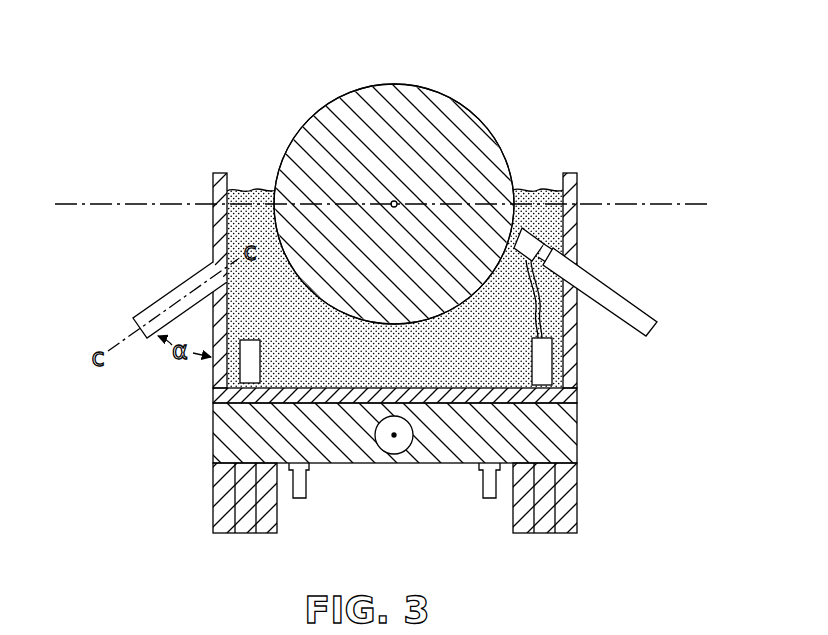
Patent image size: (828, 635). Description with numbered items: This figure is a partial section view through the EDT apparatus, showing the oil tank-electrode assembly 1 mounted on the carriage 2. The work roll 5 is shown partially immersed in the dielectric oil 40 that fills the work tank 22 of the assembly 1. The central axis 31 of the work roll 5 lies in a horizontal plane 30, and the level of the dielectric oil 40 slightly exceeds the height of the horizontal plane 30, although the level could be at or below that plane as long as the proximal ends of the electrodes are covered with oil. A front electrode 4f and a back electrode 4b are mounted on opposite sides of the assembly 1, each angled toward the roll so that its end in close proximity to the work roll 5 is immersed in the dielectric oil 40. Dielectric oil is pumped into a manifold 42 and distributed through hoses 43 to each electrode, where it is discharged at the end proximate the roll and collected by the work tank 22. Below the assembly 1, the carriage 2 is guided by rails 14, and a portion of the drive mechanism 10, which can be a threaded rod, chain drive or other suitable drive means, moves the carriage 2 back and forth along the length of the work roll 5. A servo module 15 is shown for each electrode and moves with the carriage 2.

The oil tank-electrode assembly 1 is at (222, 223).
The carriage 2 is at (563, 423).
The back electrodes 4b is at (140, 312).
The front electrodes 4f is at (627, 313).
The work roll 5 is at (415, 100).
The drive mechanism 10 is at (396, 435).
The rails 14 is at (487, 475).
The servo module 15 is at (245, 525).
The work tank 22 is at (553, 190).
The horizontal plane 30 is at (153, 202).
The central axis 31 is at (397, 201).
The dielectric oil 40 is at (248, 325).
The manifold 42 is at (250, 370).
The hoses 43 is at (540, 323).